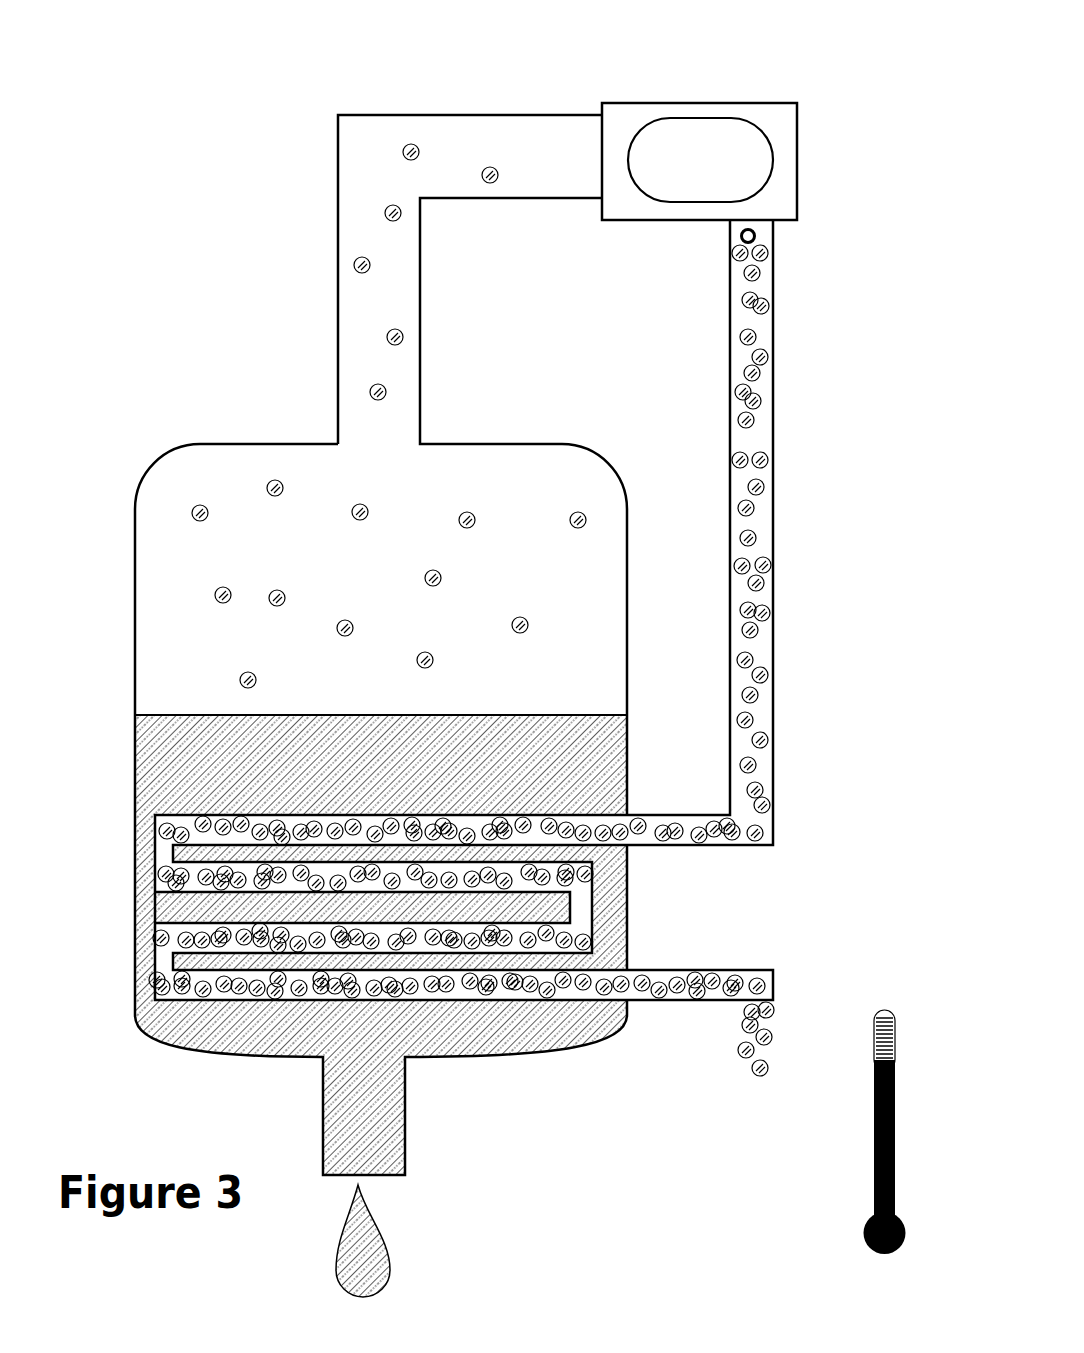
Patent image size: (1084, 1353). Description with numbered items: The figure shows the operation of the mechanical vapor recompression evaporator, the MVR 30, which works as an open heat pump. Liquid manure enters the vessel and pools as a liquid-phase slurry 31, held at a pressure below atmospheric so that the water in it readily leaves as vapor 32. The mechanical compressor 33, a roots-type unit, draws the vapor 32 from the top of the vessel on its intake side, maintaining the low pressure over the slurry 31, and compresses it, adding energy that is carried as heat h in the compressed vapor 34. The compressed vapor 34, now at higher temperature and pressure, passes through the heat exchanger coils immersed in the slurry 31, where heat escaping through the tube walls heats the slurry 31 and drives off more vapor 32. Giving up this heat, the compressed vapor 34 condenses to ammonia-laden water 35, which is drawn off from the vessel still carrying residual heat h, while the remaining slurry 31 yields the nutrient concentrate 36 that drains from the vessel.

The mechanical vapor recompression evaporator 30 is at (257, 261).
The liquid-phase slurry 31 is at (322, 1088).
The vapor 32 is at (192, 513).
The mechanical compressor 33 is at (682, 103).
The compressed vapor 34 is at (772, 607).
The ammonia-laden water 35 is at (770, 1045).
The nutrient concentrate 36 is at (363, 1241).
The heat h is at (897, 1140).